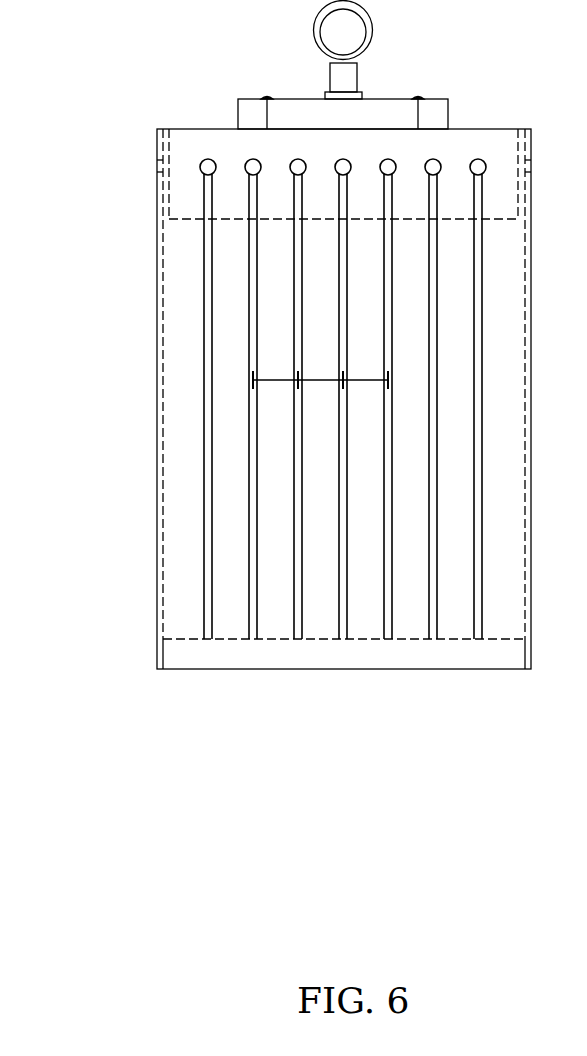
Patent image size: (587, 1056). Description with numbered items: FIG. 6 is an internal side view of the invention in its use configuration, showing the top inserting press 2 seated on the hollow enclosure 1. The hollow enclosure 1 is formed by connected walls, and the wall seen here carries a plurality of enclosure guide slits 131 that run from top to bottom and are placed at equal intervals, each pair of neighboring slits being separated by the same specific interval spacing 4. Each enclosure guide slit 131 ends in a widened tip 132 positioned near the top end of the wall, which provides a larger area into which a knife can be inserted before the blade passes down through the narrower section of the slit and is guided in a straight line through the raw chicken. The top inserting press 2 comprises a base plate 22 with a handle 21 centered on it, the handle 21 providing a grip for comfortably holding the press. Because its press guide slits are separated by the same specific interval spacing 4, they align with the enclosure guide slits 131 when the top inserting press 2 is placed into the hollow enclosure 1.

The hollow enclosure 1 is at (76, 342).
The top inserting press 2 is at (237, 65).
The handle 21 is at (343, 20).
The base plate 22 is at (293, 102).
The enclosure guide slits 131 is at (253, 345).
The widened tip 132 is at (301, 166).
The specific interval spacing 4 is at (278, 378).